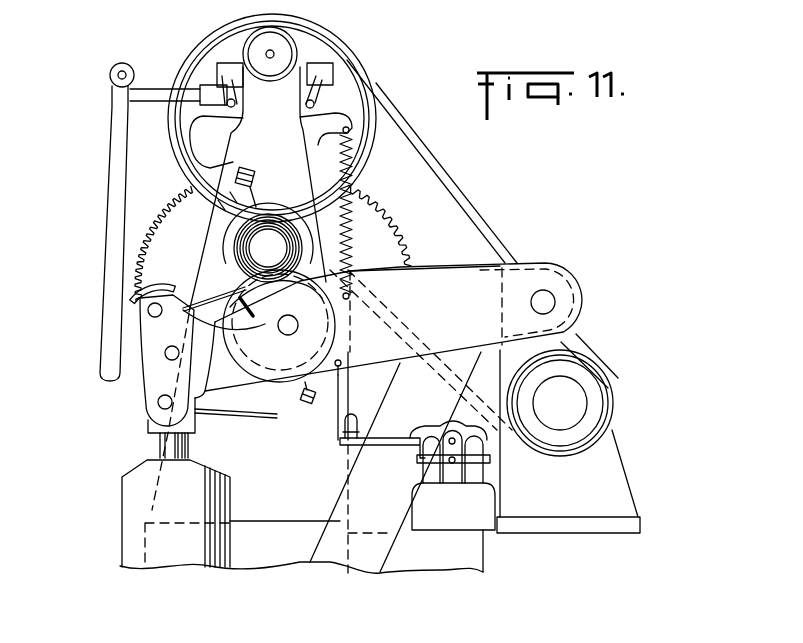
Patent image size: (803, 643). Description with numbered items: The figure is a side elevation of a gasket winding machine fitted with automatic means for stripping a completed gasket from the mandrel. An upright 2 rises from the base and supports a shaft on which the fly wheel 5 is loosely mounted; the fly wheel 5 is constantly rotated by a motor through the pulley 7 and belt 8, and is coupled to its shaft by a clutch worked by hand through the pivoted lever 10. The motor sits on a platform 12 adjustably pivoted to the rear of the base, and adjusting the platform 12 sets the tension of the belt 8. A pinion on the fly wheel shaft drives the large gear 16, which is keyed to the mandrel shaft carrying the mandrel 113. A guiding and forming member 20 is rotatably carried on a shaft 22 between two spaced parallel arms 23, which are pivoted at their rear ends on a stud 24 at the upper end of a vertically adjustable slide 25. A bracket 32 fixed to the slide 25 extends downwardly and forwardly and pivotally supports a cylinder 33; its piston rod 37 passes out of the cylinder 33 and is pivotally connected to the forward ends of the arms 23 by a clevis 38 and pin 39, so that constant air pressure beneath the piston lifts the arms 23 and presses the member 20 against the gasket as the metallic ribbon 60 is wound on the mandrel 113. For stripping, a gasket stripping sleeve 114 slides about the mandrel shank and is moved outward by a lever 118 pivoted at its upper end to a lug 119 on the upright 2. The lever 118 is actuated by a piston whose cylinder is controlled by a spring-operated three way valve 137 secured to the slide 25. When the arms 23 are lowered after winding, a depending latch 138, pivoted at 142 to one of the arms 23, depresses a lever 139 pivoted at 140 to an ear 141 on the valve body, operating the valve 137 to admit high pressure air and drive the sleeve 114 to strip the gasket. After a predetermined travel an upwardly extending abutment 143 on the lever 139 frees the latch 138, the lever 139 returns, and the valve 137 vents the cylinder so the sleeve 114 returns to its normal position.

The upright 2 is at (246, 150).
The fly wheel 5 is at (328, 52).
The pulley 7 is at (590, 402).
The belt 8 is at (447, 170).
The pivoted lever 10 is at (112, 230).
The platform 12 is at (247, 163).
The large gear 16 is at (375, 225).
The guiding and forming member 20 is at (247, 306).
The shaft 22 is at (285, 328).
The arms 23 is at (388, 330).
The stud 24 is at (549, 301).
The slide 25 is at (485, 375).
The bracket 32 is at (357, 498).
The cylinder 33 is at (125, 510).
The piston rod 37 is at (165, 448).
The clevis 38 is at (152, 427).
The pin 39 is at (158, 403).
The metallic ribbon 60 is at (225, 416).
The mandrel 113 is at (272, 240).
The gasket stripping sleeve 114 is at (296, 249).
The lever 118 is at (226, 240).
The lug 119 is at (257, 183).
The three way valve 137 is at (453, 527).
The latch 138 is at (349, 389).
The lever 139 is at (380, 443).
The pivot 140 is at (461, 440).
The ear 141 is at (456, 472).
The pivot 142 is at (347, 364).
The abutment 143 is at (345, 426).